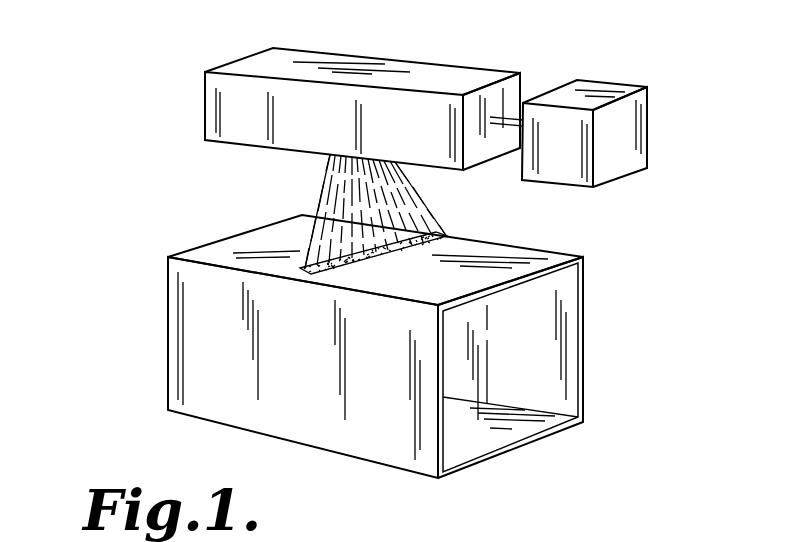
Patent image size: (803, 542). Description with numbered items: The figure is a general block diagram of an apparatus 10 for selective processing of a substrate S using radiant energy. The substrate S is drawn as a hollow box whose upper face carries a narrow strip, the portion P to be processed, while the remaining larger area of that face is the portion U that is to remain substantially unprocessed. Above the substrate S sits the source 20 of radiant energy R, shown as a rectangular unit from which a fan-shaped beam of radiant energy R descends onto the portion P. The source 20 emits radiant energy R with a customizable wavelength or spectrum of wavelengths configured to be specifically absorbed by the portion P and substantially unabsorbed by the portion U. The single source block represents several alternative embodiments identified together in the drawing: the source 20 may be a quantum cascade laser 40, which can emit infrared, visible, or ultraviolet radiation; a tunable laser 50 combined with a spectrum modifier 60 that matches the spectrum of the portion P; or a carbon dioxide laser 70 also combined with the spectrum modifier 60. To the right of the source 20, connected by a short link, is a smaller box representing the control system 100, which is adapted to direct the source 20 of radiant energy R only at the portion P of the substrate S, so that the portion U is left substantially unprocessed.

The apparatus 10 is at (284, 91).
The source of radiant energy 20 is at (282, 109).
The quantum cascade laser 40 is at (282, 109).
The tunable laser 50 is at (282, 109).
The spectrum modifier 60 is at (282, 109).
The CO2 laser 70 is at (232, 54).
The control system 100 is at (620, 163).
The radiant energy R is at (322, 178).
The portion to be processed P is at (413, 233).
The portion to be substantially unprocessed U is at (510, 257).
The substrate S is at (375, 346).